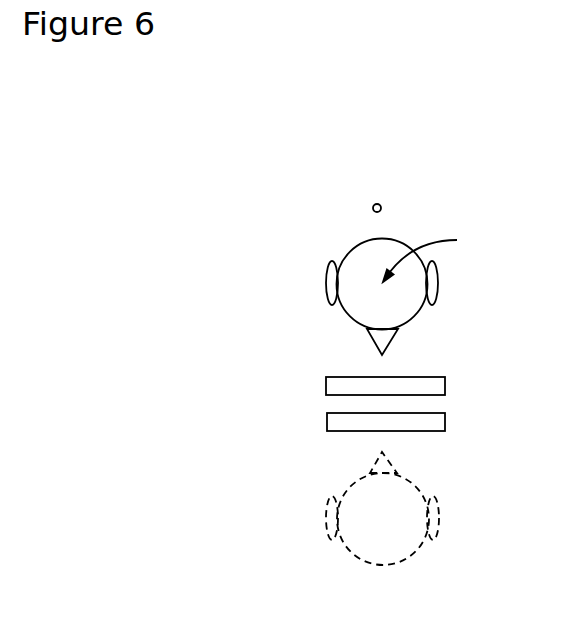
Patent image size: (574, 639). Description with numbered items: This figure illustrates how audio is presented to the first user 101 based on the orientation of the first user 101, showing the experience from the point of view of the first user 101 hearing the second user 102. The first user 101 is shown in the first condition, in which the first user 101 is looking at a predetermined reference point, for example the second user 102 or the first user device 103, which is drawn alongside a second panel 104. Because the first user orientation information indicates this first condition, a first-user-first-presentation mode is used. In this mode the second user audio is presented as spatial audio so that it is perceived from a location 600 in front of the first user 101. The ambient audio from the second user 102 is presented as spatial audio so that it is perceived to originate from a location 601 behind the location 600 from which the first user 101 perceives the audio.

The first user 101 is at (385, 530).
The second user 102 is at (405, 298).
The first user device 103 is at (337, 422).
The second layer / reflector 104 is at (337, 385).
The location in front of the first user 600 is at (444, 253).
The location behind location 600 601 is at (381, 204).